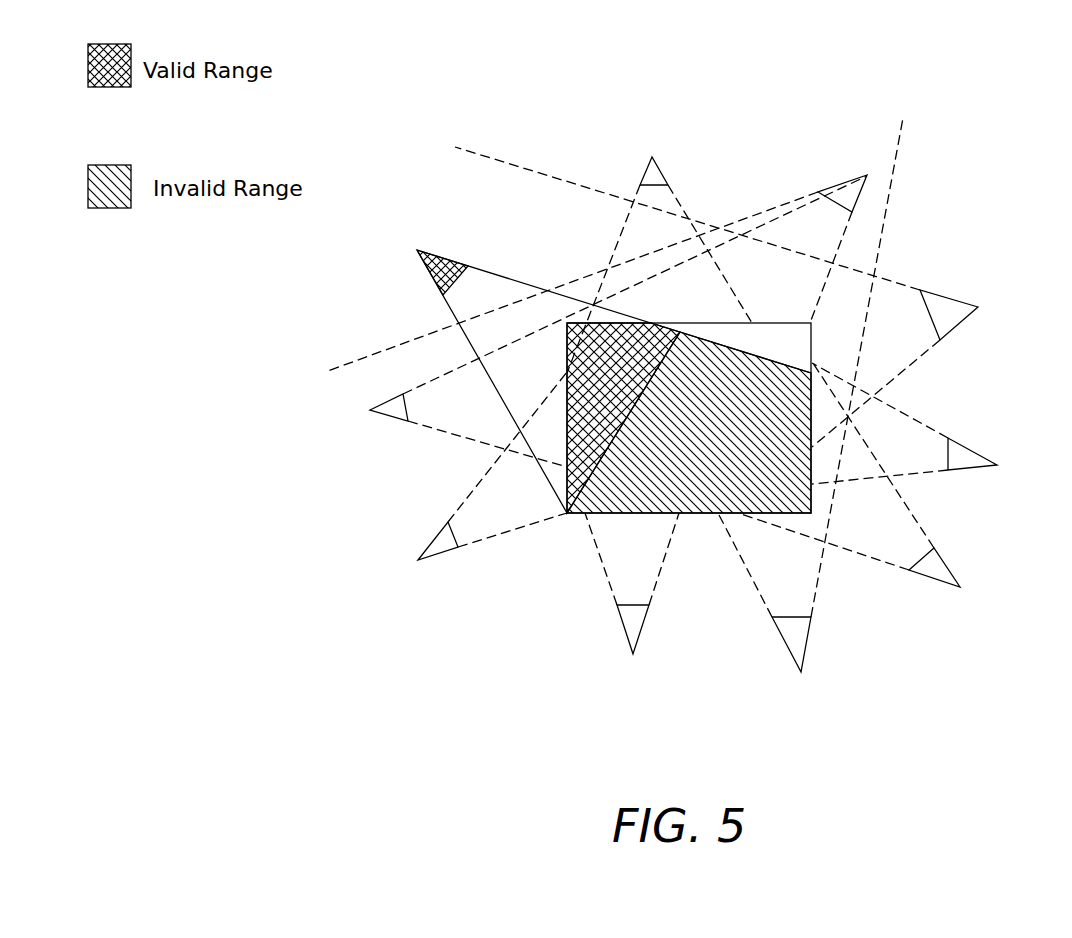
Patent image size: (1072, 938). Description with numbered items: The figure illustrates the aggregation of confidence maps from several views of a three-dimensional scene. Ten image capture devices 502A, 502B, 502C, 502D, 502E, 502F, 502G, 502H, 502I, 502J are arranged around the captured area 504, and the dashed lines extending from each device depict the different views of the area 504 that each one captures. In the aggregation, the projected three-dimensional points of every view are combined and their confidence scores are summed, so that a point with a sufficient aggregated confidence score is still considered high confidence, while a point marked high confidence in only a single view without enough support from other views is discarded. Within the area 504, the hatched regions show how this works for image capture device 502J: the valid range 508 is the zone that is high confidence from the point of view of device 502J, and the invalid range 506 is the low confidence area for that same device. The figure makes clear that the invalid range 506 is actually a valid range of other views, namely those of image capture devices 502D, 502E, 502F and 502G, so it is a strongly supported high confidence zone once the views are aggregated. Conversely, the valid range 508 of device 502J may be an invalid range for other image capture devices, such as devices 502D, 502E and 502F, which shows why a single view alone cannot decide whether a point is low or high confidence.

The image capture device 502A is at (657, 170).
The image capture device 502B is at (840, 184).
The image capture device 502C is at (953, 298).
The image capture device 502D is at (972, 468).
The image capture device 502E is at (935, 578).
The image capture device 502F is at (808, 643).
The image capture device 502G is at (638, 634).
The image capture device 502H is at (440, 534).
The image capture device 502I is at (392, 417).
The image capture device 502J is at (451, 262).
The area 504 is at (812, 382).
The invalid range 506 is at (773, 418).
The valid range 508 is at (597, 367).